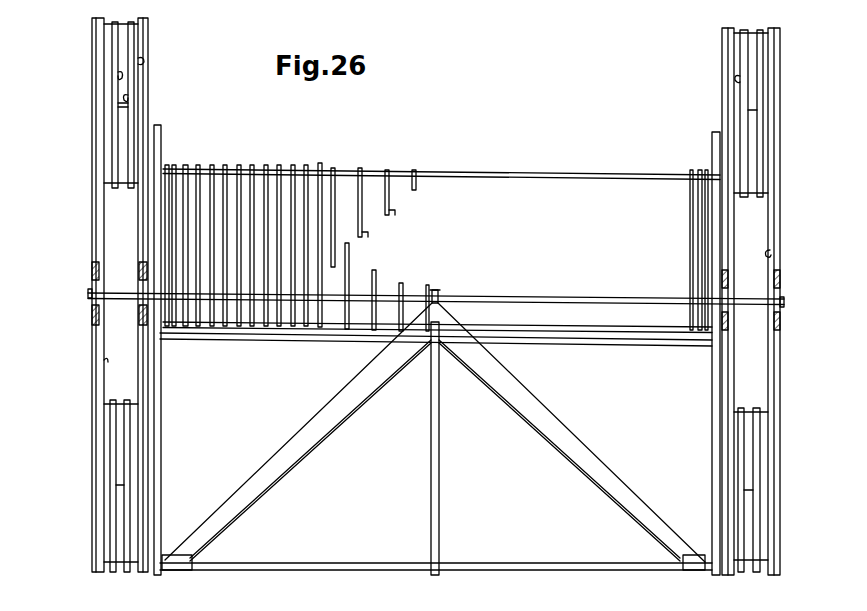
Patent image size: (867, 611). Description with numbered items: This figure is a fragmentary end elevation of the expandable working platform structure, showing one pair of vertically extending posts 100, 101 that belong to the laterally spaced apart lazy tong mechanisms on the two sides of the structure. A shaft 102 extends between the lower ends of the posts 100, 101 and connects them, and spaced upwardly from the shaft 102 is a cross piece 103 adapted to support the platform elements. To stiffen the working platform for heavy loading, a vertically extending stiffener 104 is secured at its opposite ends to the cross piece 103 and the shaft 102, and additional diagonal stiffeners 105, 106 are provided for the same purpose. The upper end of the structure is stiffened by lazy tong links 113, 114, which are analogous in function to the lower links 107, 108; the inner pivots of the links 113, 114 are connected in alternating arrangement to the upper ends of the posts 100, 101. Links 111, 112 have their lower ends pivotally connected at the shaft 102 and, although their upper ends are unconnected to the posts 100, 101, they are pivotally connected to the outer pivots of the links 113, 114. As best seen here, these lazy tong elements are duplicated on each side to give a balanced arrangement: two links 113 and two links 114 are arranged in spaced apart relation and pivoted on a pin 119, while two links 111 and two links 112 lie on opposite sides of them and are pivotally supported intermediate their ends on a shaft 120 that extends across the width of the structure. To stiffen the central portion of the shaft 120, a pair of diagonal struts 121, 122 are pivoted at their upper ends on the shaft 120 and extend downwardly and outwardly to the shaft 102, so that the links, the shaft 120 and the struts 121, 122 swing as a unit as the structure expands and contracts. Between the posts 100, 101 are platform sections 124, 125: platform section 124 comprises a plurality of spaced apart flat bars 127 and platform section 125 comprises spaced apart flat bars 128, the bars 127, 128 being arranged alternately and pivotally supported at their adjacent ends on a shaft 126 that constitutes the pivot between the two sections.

The posts 100 is at (123, 296).
The posts 101 is at (738, 79).
The shaft 102 is at (577, 556).
The cross piece 103 is at (573, 347).
The vertically extending stiffener 104 is at (440, 478).
The diagonal stiffener 105 is at (357, 408).
The diagonal stiffener 106 is at (515, 400).
The link 107 is at (112, 527).
The link 108 is at (120, 506).
The link 111 is at (144, 62).
The link 112 is at (100, 351).
The lazy tong link 113 is at (114, 58).
The lazy tong link 114 is at (122, 76).
The pin 119 is at (128, 106).
The shaft 120 is at (618, 292).
The diagonal strut 121 is at (338, 388).
The diagonal strut 122 is at (578, 433).
The platform section 124 is at (309, 163).
The platform section 125 is at (628, 334).
The shaft 126 is at (535, 176).
The flat bars 127 is at (374, 229).
The flat bars 128 is at (374, 272).